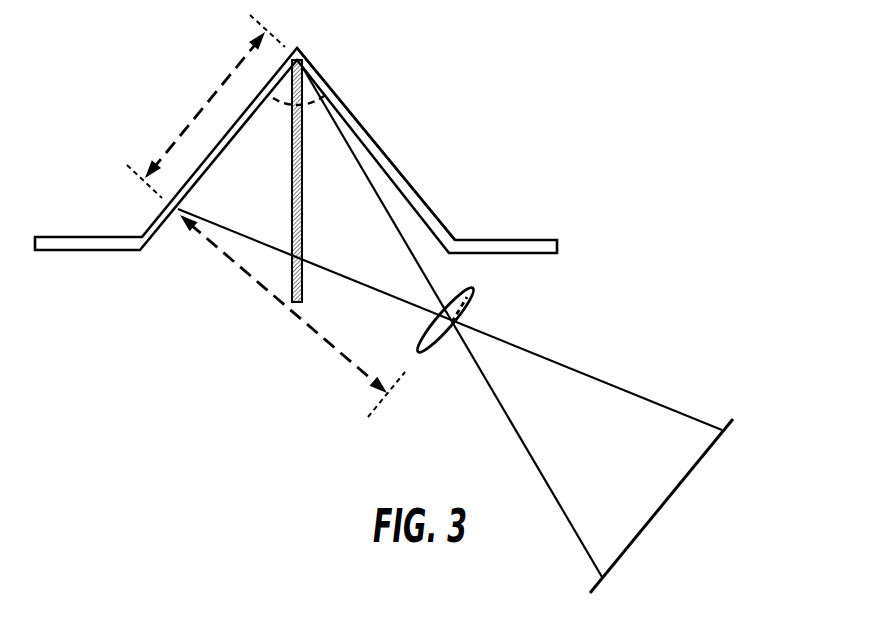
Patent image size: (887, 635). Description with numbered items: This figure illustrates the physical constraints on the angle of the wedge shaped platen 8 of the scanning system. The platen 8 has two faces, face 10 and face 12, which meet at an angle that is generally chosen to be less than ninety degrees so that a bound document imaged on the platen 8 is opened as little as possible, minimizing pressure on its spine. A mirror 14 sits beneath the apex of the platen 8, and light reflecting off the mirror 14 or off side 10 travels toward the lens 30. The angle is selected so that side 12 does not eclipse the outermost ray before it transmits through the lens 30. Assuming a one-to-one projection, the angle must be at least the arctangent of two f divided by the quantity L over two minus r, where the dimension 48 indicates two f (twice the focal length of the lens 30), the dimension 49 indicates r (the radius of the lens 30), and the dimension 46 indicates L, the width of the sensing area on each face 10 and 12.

The wedge shaped platen 8 is at (377, 100).
The face 10 is at (157, 218).
The face 12 is at (428, 207).
The mirror 14 is at (302, 208).
The lens 30 is at (444, 348).
The width L of sensing area 46 is at (183, 130).
The distance 2f 48 is at (303, 323).
The lens radius r 49 is at (470, 310).